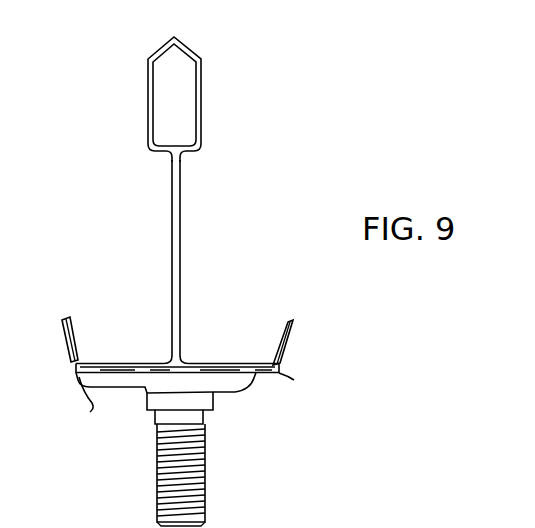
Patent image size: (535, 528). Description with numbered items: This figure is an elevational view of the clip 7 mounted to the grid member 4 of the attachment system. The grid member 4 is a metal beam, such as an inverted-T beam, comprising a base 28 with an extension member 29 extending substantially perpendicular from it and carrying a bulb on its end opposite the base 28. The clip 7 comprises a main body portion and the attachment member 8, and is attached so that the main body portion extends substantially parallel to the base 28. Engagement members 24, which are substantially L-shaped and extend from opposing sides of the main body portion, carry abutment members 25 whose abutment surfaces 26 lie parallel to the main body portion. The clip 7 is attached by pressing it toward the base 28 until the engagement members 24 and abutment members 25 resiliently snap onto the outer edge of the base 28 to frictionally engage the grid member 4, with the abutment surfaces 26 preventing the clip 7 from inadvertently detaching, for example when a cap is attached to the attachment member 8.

The base 28 is at (201, 97).
The grid member 4 is at (181, 219).
The engagement members 24 is at (68, 319).
The abutment members 25 is at (82, 356).
The abutment surfaces 26 is at (90, 412).
The extension member 29 is at (255, 374).
The clip 7 is at (160, 386).
The attachment member 8 is at (195, 466).